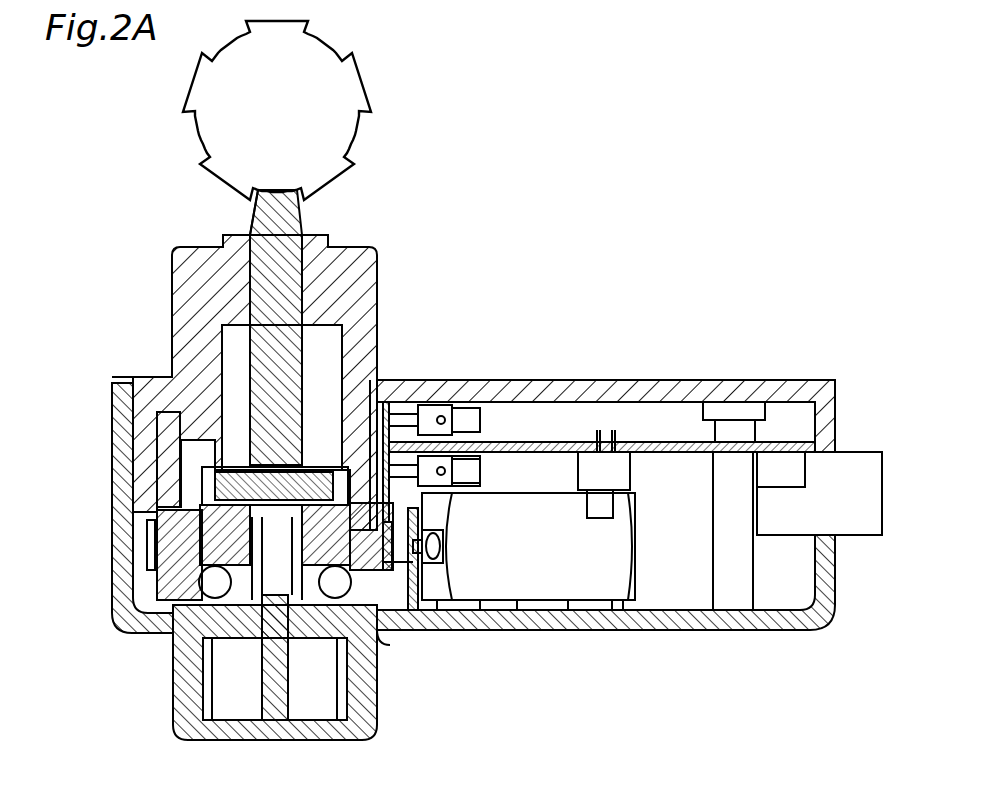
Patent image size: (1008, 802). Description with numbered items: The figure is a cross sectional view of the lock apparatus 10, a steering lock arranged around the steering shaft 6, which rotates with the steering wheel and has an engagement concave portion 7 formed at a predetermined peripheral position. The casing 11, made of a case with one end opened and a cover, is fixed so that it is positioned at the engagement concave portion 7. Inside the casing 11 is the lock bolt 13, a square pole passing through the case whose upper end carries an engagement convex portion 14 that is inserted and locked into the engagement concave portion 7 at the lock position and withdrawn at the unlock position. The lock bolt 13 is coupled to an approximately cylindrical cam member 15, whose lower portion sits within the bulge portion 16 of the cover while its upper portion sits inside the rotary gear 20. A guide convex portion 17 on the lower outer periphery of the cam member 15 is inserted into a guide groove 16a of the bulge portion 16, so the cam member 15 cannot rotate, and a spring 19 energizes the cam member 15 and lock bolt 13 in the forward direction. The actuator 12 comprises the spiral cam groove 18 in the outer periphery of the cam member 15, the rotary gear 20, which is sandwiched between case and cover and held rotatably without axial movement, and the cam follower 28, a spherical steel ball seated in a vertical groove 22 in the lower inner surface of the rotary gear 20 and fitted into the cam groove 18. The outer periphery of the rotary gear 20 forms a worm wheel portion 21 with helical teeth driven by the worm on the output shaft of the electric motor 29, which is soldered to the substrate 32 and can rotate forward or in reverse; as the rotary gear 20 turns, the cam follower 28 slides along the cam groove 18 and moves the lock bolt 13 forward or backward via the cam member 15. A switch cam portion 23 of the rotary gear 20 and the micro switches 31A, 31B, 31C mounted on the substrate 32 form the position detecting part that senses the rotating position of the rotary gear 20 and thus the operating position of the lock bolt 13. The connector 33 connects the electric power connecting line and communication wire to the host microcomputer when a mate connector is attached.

The steering shaft 6 is at (368, 78).
The engagement concave portion 7 is at (258, 205).
The lock apparatus 10 is at (722, 248).
The casing 11 is at (800, 392).
The actuator 12 is at (112, 605).
The lock bolt 13 is at (288, 290).
The engagement convex portion 14 is at (290, 203).
The cam member 15 is at (378, 640).
The bulge portion 16 is at (373, 693).
The guide groove 16a is at (340, 712).
The guide convex portion 17 is at (375, 665).
The cam groove 18 is at (225, 535).
The spring 19 is at (250, 690).
The rotary gear 20 is at (423, 545).
The worm wheel portion 21 is at (150, 547).
The vertical groove 22 is at (207, 587).
The switch cam portion 23 is at (389, 420).
The cam follower 28 is at (152, 592).
The electric motor 29 is at (568, 580).
The micro switch 31A is at (447, 405).
The micro switch 31B is at (478, 470).
The micro switch 31C is at (449, 471).
The substrate 32 is at (667, 452).
The connector 33 is at (858, 465).